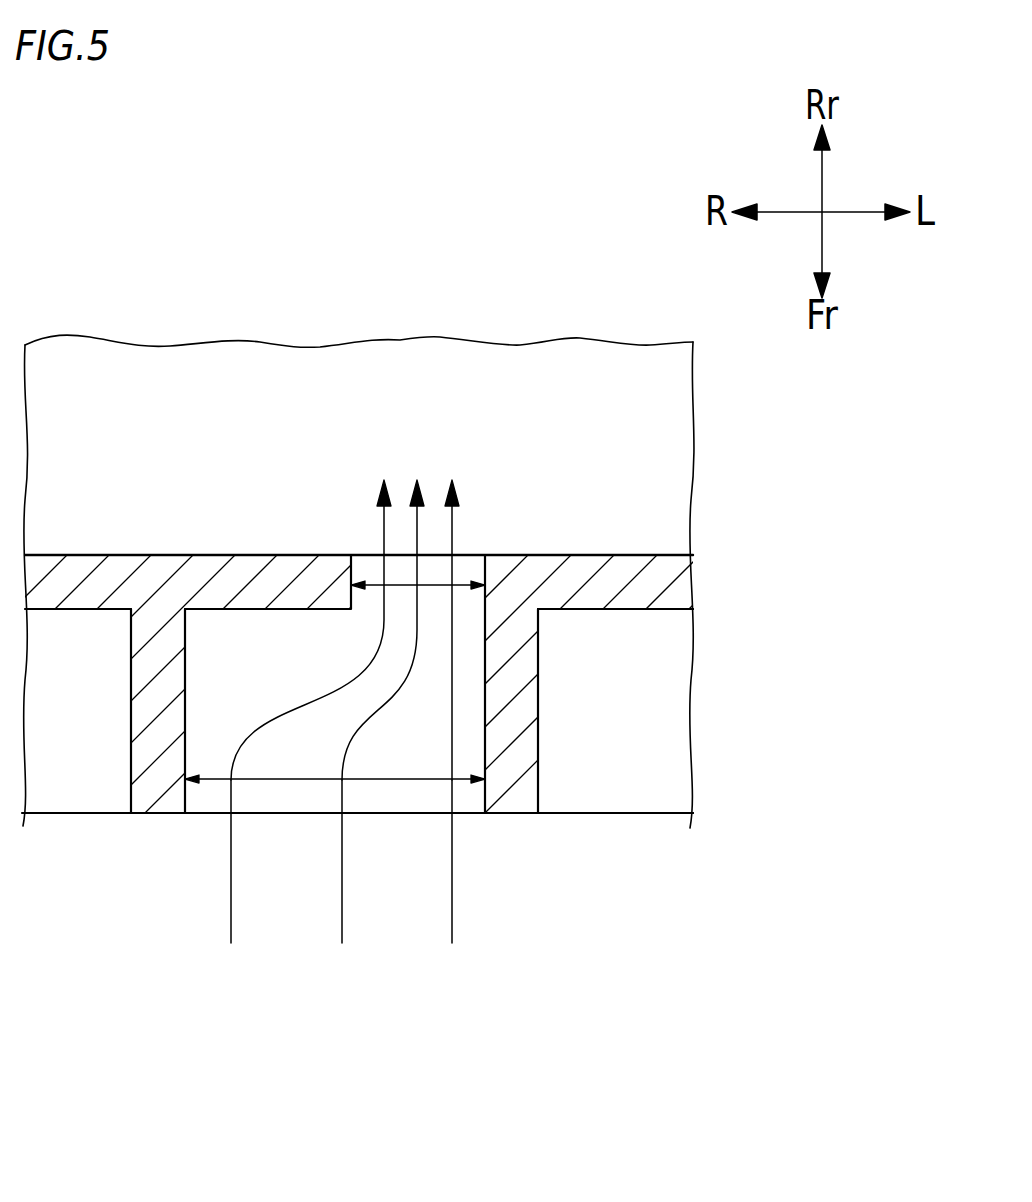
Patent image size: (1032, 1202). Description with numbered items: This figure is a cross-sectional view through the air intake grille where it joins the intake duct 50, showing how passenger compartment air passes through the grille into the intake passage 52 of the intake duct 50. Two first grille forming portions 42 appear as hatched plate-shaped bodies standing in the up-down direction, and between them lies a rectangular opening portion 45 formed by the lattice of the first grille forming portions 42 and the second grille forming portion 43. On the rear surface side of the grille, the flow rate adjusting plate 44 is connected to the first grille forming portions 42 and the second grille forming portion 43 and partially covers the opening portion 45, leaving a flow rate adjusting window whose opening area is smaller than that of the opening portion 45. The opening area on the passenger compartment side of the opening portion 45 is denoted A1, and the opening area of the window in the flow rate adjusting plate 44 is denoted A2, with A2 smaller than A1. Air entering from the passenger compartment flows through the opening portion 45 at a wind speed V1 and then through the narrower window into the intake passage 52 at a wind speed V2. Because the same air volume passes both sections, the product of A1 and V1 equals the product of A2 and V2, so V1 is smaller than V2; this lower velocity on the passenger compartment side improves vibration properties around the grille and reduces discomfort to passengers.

The intake duct 50 is at (110, 340).
The intake passage 52 is at (232, 432).
The flow rate adjusting plate 44 is at (628, 567).
The first grille forming portion 42 is at (145, 708).
The second grille forming portion 43 is at (640, 748).
The opening portion 45 is at (403, 788).
The opening area on the passenger compartment side of the opening portion A1 is at (288, 788).
The opening area of the flow rate adjusting windows A2 is at (462, 580).
The wind speed of air flowing through the passenger compartment side of the opening V1 is at (230, 890).
The wind speed of air flowing through the flow rate adjusting windows V2 is at (382, 546).